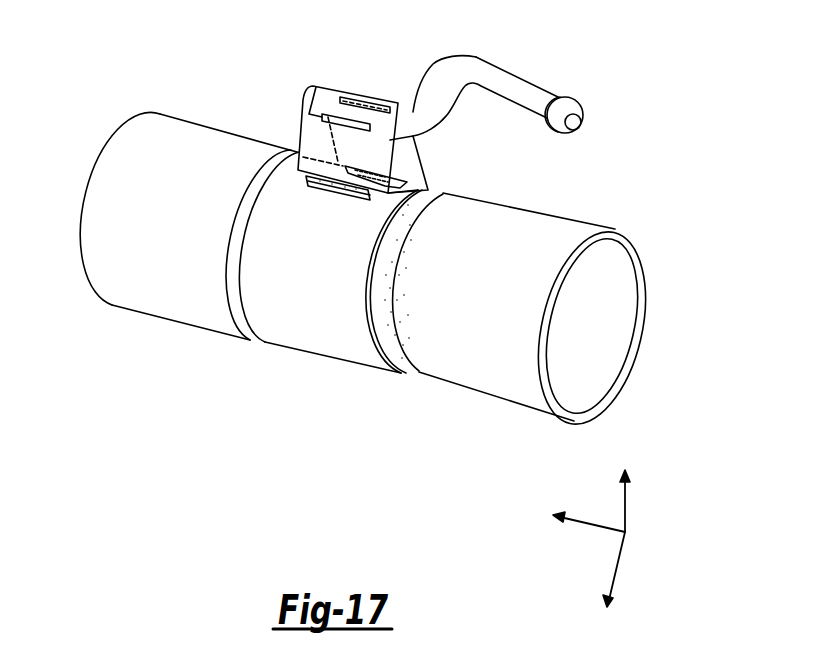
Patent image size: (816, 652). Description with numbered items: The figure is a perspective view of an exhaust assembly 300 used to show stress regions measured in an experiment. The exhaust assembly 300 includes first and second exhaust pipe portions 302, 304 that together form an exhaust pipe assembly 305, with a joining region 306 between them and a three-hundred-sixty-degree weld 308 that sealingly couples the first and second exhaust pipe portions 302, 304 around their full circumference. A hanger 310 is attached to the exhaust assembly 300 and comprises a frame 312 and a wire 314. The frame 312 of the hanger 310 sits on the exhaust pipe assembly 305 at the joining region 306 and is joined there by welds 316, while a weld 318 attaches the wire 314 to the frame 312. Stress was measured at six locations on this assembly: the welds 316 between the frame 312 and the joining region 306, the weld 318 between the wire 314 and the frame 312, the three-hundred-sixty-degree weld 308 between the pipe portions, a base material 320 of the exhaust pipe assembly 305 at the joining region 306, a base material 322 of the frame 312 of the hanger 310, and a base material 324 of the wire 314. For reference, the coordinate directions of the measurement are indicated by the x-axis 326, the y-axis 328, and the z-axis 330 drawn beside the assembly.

The exhaust assembly 300 is at (658, 62).
The first exhaust pipe portion 302 is at (560, 238).
The second exhaust pipe portion 304 is at (176, 126).
The exhaust pipe assembly 305 is at (97, 142).
The joining region 306 is at (290, 320).
The 360° weld 308 is at (387, 317).
The hanger 310 is at (320, 78).
The frame 312 is at (302, 103).
The wire 314 is at (408, 117).
The welds 316 is at (352, 189).
The weld 318 is at (335, 117).
The base material 320 is at (270, 277).
The base material 322 is at (367, 147).
The base material 324 is at (520, 86).
The x-axis 326 is at (582, 522).
The y-axis 328 is at (623, 552).
The z-axis 330 is at (627, 500).